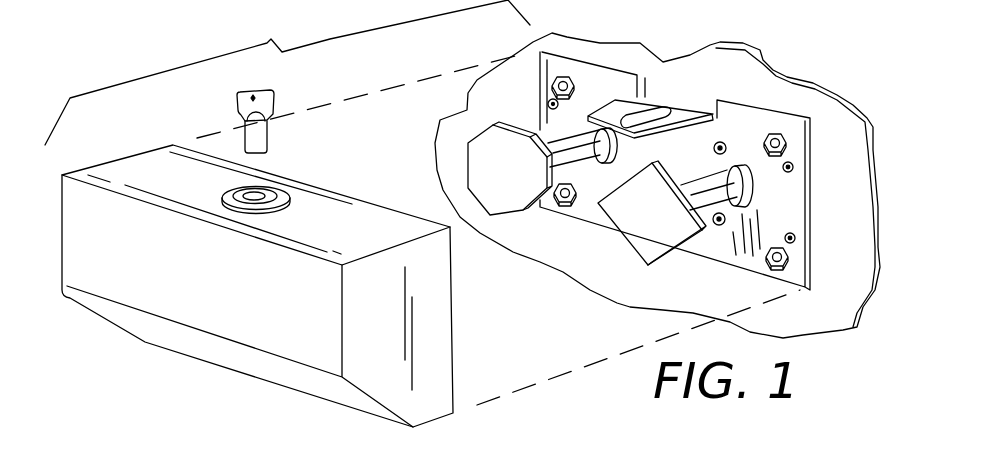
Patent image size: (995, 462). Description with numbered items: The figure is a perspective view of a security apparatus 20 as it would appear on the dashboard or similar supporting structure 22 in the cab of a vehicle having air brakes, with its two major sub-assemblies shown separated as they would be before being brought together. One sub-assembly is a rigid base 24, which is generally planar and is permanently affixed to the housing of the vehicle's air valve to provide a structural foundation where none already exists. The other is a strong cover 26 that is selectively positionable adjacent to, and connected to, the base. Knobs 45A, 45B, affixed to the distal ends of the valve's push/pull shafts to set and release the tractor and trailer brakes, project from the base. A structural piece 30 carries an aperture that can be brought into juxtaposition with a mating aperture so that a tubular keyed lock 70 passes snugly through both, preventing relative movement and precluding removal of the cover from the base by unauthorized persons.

The security apparatus 20 is at (287, 72).
The supporting structure 22 is at (840, 120).
The rigid base 24 is at (727, 252).
The cover 26 is at (428, 370).
The structural piece 30 is at (682, 112).
The knob 45A is at (653, 252).
The knob 45B is at (522, 199).
The lock 70 is at (270, 192).